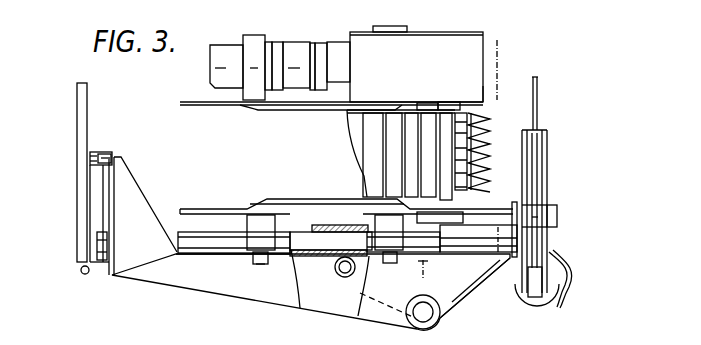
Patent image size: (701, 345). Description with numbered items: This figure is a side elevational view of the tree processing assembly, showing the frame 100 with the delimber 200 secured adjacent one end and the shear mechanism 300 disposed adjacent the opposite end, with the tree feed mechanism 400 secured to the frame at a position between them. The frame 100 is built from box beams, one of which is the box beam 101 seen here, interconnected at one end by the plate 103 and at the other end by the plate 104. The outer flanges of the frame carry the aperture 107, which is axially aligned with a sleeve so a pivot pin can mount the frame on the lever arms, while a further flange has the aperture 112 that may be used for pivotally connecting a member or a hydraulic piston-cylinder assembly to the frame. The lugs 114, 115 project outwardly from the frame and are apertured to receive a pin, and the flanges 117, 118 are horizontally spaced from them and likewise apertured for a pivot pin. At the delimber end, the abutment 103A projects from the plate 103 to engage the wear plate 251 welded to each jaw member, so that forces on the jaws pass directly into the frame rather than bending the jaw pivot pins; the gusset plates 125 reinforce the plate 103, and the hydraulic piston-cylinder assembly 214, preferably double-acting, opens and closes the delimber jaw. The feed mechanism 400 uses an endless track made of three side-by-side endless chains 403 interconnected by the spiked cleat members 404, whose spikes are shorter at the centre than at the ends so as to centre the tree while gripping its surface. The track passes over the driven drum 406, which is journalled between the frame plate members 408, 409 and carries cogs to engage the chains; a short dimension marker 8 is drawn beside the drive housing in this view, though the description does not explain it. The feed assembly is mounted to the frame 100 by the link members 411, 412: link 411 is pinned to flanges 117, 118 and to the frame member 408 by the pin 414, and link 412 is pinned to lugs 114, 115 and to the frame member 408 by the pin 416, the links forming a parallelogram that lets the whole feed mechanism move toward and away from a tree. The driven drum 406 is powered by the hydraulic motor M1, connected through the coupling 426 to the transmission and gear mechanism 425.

The frame 100 is at (343, 303).
The box beam 101 is at (198, 249).
The plate 103 is at (112, 276).
The abutment 103A is at (99, 154).
The plate 104 is at (516, 256).
The aperture 107 is at (441, 313).
The aperture 112 is at (338, 275).
The lug 114 is at (315, 261).
The lug 115 is at (323, 225).
The flange 117 is at (478, 255).
The flange 118 is at (480, 224).
The gusset plate 125 is at (133, 196).
The delimber 200 is at (83, 239).
The hydraulic piston-cylinder assembly 214 is at (81, 273).
The wear plate 251 is at (95, 152).
The shear mechanism 300 is at (549, 220).
The tree feed mechanism 400 is at (489, 85).
The endless chain 403 is at (483, 148).
The spiked cleat member 404 is at (428, 118).
The driven drum 406 is at (462, 110).
The frame plate member 408 is at (227, 210).
The frame plate member 409 is at (193, 102).
The link member 411 is at (395, 250).
The link member 412 is at (252, 238).
The pin 414 is at (374, 262).
The pin 416 is at (264, 262).
The transmission and gear mechanism 425 is at (363, 63).
The coupling 426 is at (293, 53).
The hydraulic motor M1 is at (227, 55).
The offset dimension 8 is at (496, 68).